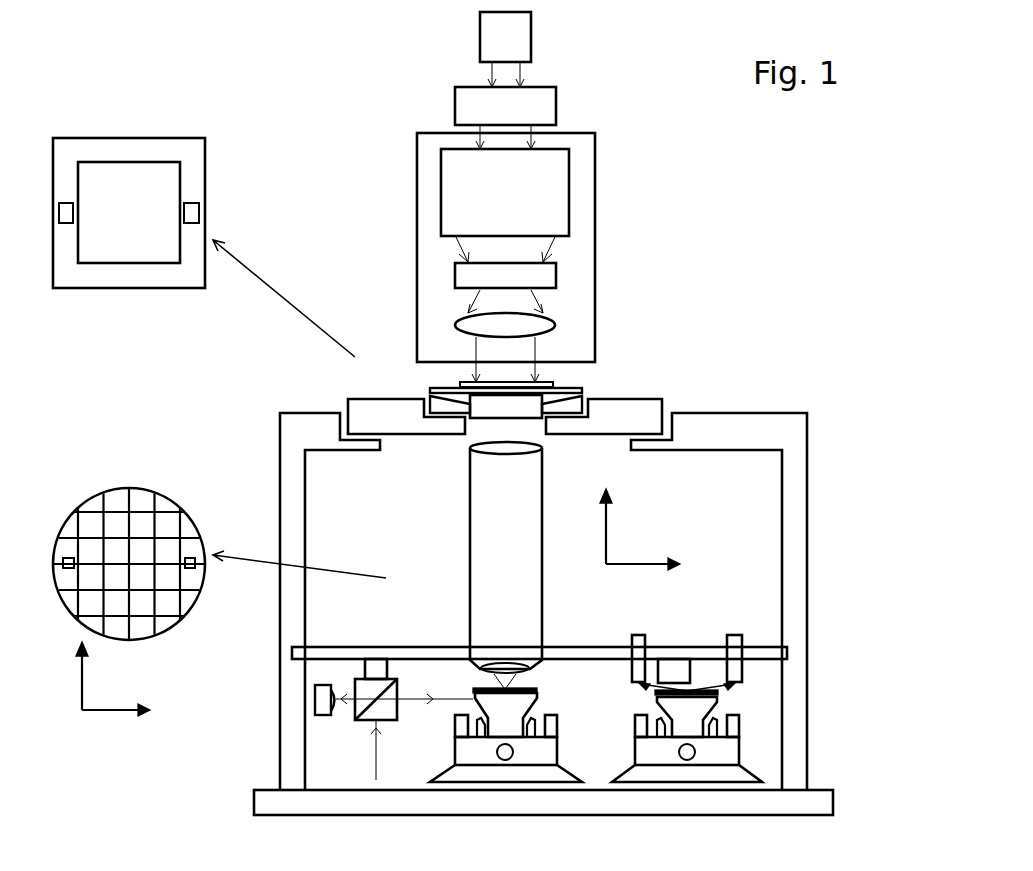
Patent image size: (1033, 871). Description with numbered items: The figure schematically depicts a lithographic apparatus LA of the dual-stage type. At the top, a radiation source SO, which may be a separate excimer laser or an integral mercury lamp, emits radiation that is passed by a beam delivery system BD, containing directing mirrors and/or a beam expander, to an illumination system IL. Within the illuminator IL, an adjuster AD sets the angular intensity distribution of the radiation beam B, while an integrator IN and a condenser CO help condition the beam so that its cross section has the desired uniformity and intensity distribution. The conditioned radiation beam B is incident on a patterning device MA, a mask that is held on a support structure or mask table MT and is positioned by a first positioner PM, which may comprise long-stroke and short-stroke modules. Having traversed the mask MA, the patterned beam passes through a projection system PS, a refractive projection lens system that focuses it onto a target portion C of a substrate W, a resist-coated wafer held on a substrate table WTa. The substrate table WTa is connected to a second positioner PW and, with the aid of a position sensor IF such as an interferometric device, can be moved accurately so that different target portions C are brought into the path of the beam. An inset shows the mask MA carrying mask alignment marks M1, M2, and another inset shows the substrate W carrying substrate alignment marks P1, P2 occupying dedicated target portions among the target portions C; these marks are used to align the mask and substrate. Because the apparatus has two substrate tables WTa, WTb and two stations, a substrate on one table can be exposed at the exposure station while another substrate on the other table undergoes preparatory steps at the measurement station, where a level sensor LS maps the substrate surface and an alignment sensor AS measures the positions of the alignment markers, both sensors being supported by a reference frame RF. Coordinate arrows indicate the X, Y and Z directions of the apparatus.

The radiation source SO is at (532, 42).
The beam delivery system BD is at (557, 113).
The illumination system (illuminator) IL is at (595, 172).
The adjuster AD is at (569, 218).
The integrator IN is at (557, 272).
The condenser CO is at (553, 323).
The radiation beam B is at (506, 377).
The patterning device (mask) MA is at (450, 389).
The mask alignment mark M1 is at (192, 203).
The mask alignment mark M2 is at (62, 203).
The first positioner PM is at (342, 399).
The support structure (mask table) MT is at (650, 399).
The lithographic apparatus LA is at (714, 226).
The projection system PS is at (543, 540).
The substrate (wafer) W is at (480, 688).
The target portion C is at (130, 565).
The substrate alignment mark P1 is at (68, 558).
The substrate alignment mark P2 is at (188, 558).
The reference frame RF is at (598, 647).
The level sensor LS is at (742, 636).
The alignment sensor AS is at (669, 667).
The substrate table WTa is at (537, 700).
The substrate table WTb is at (718, 699).
The second positioner PW is at (455, 758).
The position sensor IF is at (345, 735).
The X axis X is at (381, 640).
The Y axis Y is at (74, 674).
The Z axis Z is at (615, 526).